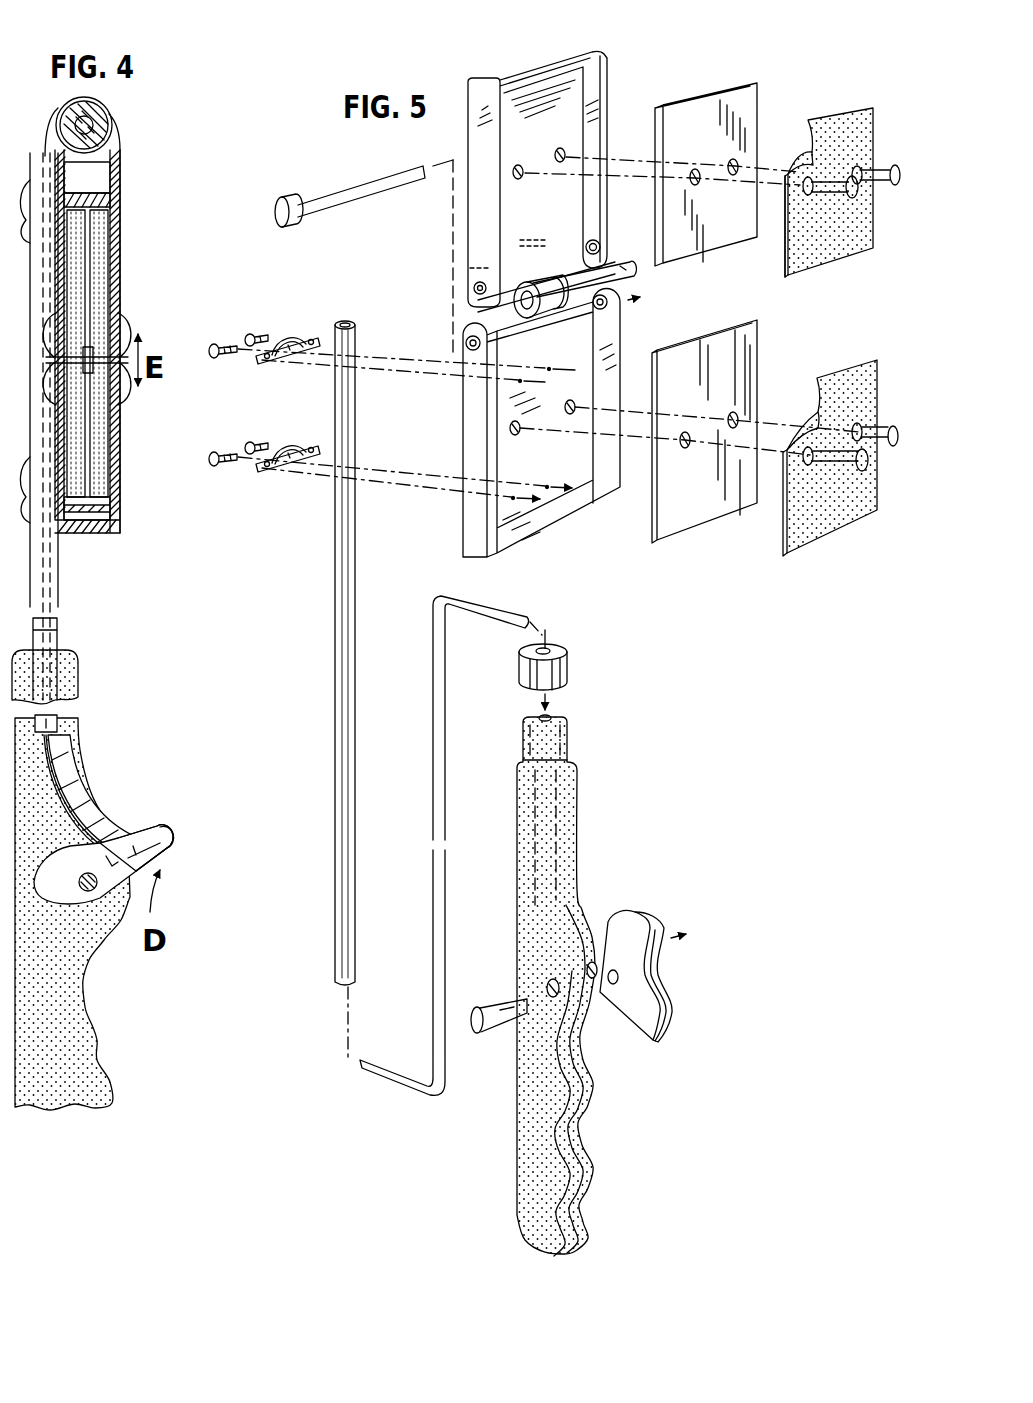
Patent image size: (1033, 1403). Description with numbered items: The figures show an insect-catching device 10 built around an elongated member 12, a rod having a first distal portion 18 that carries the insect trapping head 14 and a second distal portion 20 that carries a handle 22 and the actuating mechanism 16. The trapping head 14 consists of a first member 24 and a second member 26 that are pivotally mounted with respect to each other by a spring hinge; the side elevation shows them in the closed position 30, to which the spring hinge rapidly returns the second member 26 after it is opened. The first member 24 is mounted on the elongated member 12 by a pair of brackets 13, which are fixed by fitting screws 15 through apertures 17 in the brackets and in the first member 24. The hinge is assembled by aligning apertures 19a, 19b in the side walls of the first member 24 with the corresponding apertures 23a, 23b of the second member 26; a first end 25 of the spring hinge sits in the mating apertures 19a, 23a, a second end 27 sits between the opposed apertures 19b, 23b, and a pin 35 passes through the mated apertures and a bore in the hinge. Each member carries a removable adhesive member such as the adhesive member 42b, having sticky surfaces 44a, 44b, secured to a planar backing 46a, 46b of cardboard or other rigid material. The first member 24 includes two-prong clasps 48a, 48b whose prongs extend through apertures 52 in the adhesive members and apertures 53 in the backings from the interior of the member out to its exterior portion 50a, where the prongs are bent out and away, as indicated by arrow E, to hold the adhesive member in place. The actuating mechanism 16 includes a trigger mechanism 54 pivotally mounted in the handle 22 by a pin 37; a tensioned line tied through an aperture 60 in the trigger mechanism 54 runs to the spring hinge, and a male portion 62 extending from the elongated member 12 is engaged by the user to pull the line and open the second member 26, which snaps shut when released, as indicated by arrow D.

In FIG. 4, the device 10 is at (125, 177).
In FIG. 4, the elongated member 12 is at (60, 548).
In FIG. 5, the elongated member 12 is at (355, 627).
In FIG. 5, the brackets 13 is at (263, 470).
In FIG. 4, the insect trapping head 14 is at (115, 222).
In FIG. 5, the screws 15 is at (213, 467).
In FIG. 4, the actuating mechanism 16 is at (140, 827).
In FIG. 5, the actuating mechanism 16 is at (670, 1007).
In FIG. 5, the apertures 17 is at (514, 500).
In FIG. 5, the first distal portion 18 is at (316, 370).
In FIG. 5, the aperture of first member 19a is at (473, 352).
In FIG. 5, the aperture of first member 19b is at (614, 305).
In FIG. 5, the second distal portion 20 is at (330, 972).
In FIG. 4, the handle 22 is at (77, 962).
In FIG. 5, the handle 22 is at (587, 1203).
In FIG. 5, the aperture of second member 23a is at (473, 293).
In FIG. 5, the aperture of second member 23b is at (598, 242).
In FIG. 5, the first member 24 is at (563, 523).
In FIG. 5, the first end of spring hinge 25 is at (460, 327).
In FIG. 5, the second member 26 is at (610, 78).
In FIG. 5, the second end of spring hinge 27 is at (636, 270).
In FIG. 4, the closed position 30 is at (134, 456).
In FIG. 5, the pin 35 is at (337, 207).
In FIG. 5, the pin 37 is at (500, 1020).
In FIG. 5, the adhesive member 42b is at (842, 125).
In FIG. 5, the sticky surface 44a is at (797, 533).
In FIG. 5, the sticky surface 44b is at (827, 242).
In FIG. 5, the planar backing 46a is at (742, 497).
In FIG. 5, the planar backing 46b is at (695, 110).
In FIG. 5, the two-prong clasp 48a is at (860, 467).
In FIG. 5, the two-prong clasp 48b is at (882, 420).
In FIG. 4, the exterior portion 50a is at (125, 257).
In FIG. 5, the apertures in adhesive members 52 is at (813, 462).
In FIG. 5, the apertures in planar backings 53 is at (685, 450).
In FIG. 4, the trigger mechanism 54 is at (161, 830).
In FIG. 4, the aperture in trigger mechanism 60 is at (158, 853).
In FIG. 4, the male portion 62 is at (170, 838).